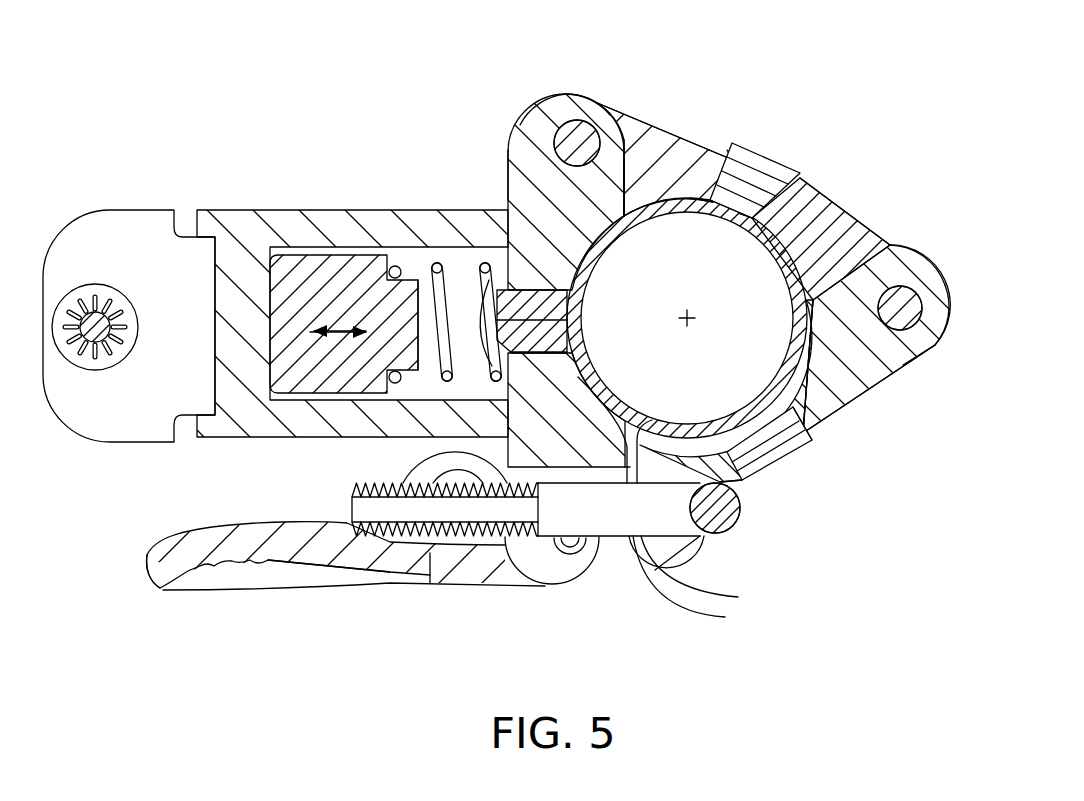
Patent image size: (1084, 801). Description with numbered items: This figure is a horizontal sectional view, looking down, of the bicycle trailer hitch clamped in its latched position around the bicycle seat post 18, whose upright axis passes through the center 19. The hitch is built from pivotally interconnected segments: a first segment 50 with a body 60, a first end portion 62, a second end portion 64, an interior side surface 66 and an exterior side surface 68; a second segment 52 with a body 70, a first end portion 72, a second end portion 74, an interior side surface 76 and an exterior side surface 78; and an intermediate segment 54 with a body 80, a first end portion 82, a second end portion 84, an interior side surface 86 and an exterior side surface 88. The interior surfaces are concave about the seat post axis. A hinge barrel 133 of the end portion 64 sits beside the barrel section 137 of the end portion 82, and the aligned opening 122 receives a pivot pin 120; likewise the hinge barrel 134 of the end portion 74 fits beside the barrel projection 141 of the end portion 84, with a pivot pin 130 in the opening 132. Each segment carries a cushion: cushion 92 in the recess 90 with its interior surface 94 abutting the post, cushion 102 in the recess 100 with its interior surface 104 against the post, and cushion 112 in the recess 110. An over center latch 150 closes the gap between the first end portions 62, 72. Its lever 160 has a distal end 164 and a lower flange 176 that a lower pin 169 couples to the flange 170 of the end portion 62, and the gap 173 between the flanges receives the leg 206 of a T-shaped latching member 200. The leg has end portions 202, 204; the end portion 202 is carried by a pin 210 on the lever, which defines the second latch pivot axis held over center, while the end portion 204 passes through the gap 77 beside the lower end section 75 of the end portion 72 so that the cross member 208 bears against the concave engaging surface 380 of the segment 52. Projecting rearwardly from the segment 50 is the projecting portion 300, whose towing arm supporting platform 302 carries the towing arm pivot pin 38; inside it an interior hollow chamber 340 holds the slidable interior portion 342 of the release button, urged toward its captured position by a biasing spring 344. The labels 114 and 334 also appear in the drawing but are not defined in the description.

The bicycle seat post 18 is at (828, 228).
The center 19 is at (694, 313).
The pivot pin 38 is at (92, 312).
The first segment 50 is at (540, 211).
The second segment 52 is at (859, 400).
The intermediate segment 54 is at (703, 144).
The body 60 is at (596, 205).
The first end portion 62 is at (533, 463).
The second end portion 64 is at (568, 102).
The interior side surface 66 is at (600, 265).
The exterior side surface 68 is at (487, 262).
The body 70 is at (866, 345).
The first end portion 72 is at (646, 458).
The second end portion 74 is at (876, 400).
The lower end section 75 is at (684, 561).
The interior side surface 76 is at (700, 437).
The gap 77 is at (702, 582).
The exterior side surface 78 is at (813, 440).
The body 80 is at (684, 175).
The first end portion 82 is at (633, 123).
The second end portion 84 is at (870, 247).
The interior side surface 86 is at (704, 204).
The exterior side surface 88 is at (702, 142).
The recess 90 is at (806, 196).
The cushion 92 is at (774, 158).
The interior surface 94 is at (751, 220).
The recess 100 is at (572, 303).
The cushion 102 is at (566, 340).
The interior surface 104 is at (564, 326).
The recess 110 is at (790, 400).
The cushion 112 is at (780, 461).
The pad surface 114 is at (747, 418).
The pivot pin 120 is at (584, 124).
The opening 122 is at (556, 142).
The pivot pin 130 is at (906, 290).
The opening 132 is at (931, 350).
The hinge barrel 133 is at (540, 117).
The hinge barrel 134 is at (893, 378).
The hinge barrel section 137 is at (664, 110).
The hinge barrel projection 141 is at (897, 258).
The over center latch 150 is at (654, 575).
The lever 160 is at (387, 582).
The distal end 164 is at (160, 586).
The second lower pin 169 is at (571, 552).
The flange 170 is at (527, 553).
The gap 173 is at (591, 565).
The lower flange 176 is at (540, 585).
The latching member 200 is at (605, 545).
The first latching member end portion 202 is at (355, 566).
The second latching member end portion 204 is at (740, 524).
The leg 206 is at (711, 612).
The cross member portion 208 is at (742, 506).
The pin 210 is at (460, 547).
The projecting portion 300 is at (260, 438).
The trailer towing arm supporting platform 302 is at (86, 412).
The slide direction 334 is at (333, 334).
The interior hollow chamber 340 is at (410, 258).
The interior portion of the button 342 is at (302, 270).
The biasing spring 344 is at (437, 260).
The engaging surface 380 is at (710, 543).